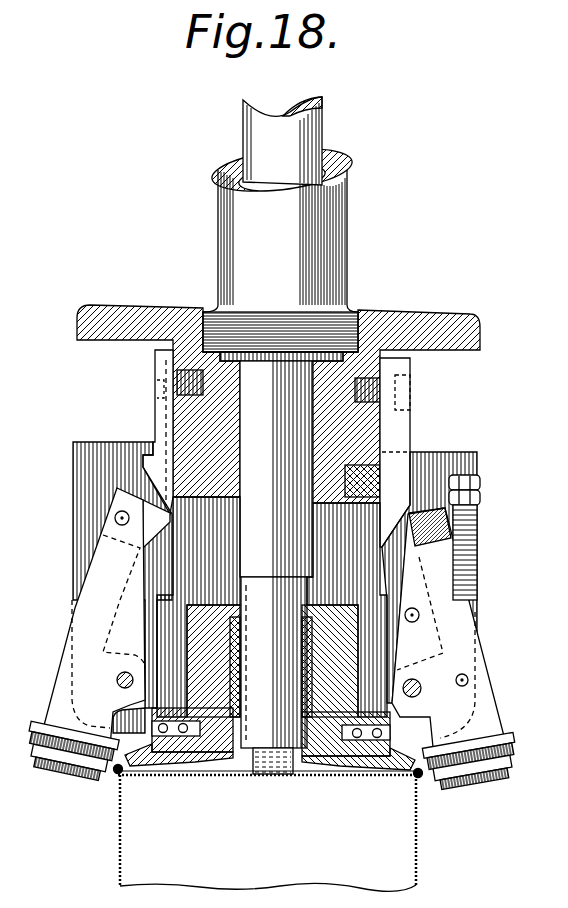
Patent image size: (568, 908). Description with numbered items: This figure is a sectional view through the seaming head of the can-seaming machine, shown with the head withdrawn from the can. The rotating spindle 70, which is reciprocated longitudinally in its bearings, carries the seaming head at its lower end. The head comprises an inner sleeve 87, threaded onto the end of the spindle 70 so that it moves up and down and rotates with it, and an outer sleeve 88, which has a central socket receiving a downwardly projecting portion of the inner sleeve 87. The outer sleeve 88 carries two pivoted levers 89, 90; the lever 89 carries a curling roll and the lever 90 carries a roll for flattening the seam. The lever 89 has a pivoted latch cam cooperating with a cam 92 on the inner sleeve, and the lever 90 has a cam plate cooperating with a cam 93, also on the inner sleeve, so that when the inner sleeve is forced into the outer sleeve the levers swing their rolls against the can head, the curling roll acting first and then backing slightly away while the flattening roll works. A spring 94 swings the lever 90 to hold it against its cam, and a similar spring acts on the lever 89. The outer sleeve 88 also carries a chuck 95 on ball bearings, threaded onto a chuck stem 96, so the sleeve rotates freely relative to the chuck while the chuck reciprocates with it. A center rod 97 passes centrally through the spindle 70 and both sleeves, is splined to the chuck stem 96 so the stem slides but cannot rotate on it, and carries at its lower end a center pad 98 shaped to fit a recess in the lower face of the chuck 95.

The spindle 70 is at (347, 225).
The inner sleeve 87 is at (113, 308).
The outer sleeve 88 is at (82, 488).
The pivoted lever 89 is at (88, 651).
The pivoted lever 90 is at (450, 623).
The cam 92 is at (147, 467).
The cam 93 is at (400, 443).
The spring 94 is at (478, 541).
The chuck 95 is at (153, 750).
The chuck stem 96 is at (320, 750).
The center rod 97 is at (322, 126).
The center pad 98 is at (236, 771).